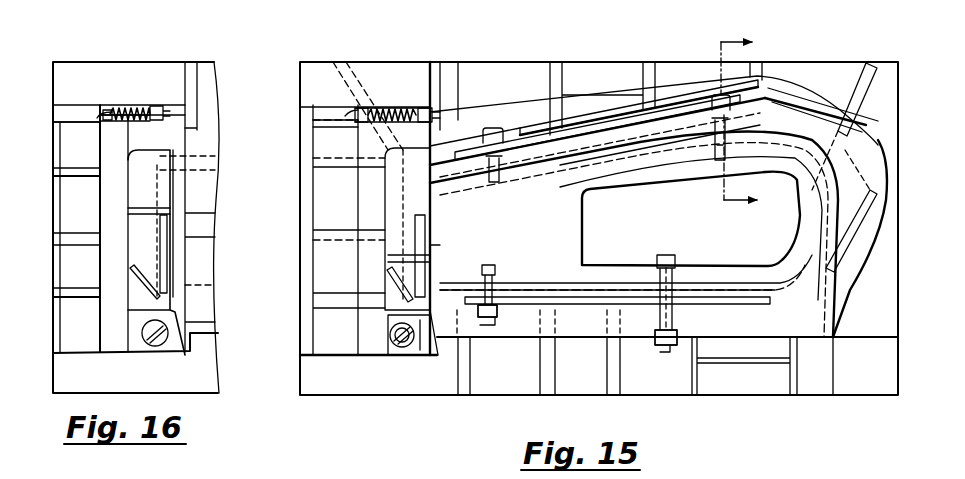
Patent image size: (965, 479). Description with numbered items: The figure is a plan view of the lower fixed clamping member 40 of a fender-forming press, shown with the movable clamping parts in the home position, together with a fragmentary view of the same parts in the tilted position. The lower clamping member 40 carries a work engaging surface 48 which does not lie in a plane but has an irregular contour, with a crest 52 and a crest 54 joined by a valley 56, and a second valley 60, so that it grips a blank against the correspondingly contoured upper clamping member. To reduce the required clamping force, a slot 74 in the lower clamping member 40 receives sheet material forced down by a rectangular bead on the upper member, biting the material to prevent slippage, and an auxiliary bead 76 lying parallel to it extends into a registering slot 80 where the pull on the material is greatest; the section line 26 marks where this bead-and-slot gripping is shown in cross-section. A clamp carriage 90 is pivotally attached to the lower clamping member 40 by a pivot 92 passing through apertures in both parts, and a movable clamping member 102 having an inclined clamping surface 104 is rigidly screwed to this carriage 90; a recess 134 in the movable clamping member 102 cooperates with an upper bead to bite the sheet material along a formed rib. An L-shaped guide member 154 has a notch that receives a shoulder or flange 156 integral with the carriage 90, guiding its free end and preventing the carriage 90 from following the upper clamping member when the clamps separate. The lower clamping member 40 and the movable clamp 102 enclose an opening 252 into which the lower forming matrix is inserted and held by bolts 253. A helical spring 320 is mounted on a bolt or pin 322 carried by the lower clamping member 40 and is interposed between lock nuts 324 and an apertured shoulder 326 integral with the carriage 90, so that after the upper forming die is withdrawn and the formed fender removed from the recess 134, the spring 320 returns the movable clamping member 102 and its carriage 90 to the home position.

In FIG. 15, the section line 26 is at (734, 123).
In FIG. 15, the lower fixed clamping member 40 is at (820, 315).
In FIG. 15, the work engaging surface 48 is at (878, 183).
In FIG. 15, the crest 52 is at (487, 322).
In FIG. 15, the crest 54 is at (806, 120).
In FIG. 15, the valley 56 is at (750, 313).
In FIG. 15, the second valley 60 is at (502, 152).
In FIG. 15, the slot 74 is at (786, 98).
In FIG. 15, the auxiliary bead 76 is at (667, 350).
In FIG. 15, the slot 80 is at (622, 118).
In FIG. 16, the clamp carriage 90 is at (70, 262).
In FIG. 15, the clamp carriage 90 is at (323, 203).
In FIG. 16, the pivot 92 is at (158, 348).
In FIG. 15, the pivot 92 is at (400, 348).
In FIG. 16, the movable clamping member 102 is at (143, 188).
In FIG. 15, the movable clamping member 102 is at (403, 240).
In FIG. 16, the inclined clamping surface 104 is at (143, 247).
In FIG. 15, the inclined clamping surface 104 is at (425, 208).
In FIG. 15, the recess 134 is at (440, 245).
In FIG. 16, the L-shaped guide member 154 is at (96, 118).
In FIG. 15, the L-shaped guide member 154 is at (352, 112).
In FIG. 16, the shoulder or flange 156 is at (63, 124).
In FIG. 15, the shoulder or flange 156 is at (340, 122).
In FIG. 15, the opening 252 is at (582, 244).
In FIG. 15, the bolts 253 is at (486, 160).
In FIG. 16, the helical spring 320 is at (140, 110).
In FIG. 15, the helical spring 320 is at (402, 108).
In FIG. 16, the bolt or pin 322 is at (100, 121).
In FIG. 15, the bolt or pin 322 is at (355, 115).
In FIG. 16, the lock nuts 324 is at (115, 120).
In FIG. 15, the lock nuts 324 is at (367, 108).
In FIG. 16, the apertured shoulder 326 is at (163, 110).
In FIG. 15, the apertured shoulder 326 is at (428, 106).